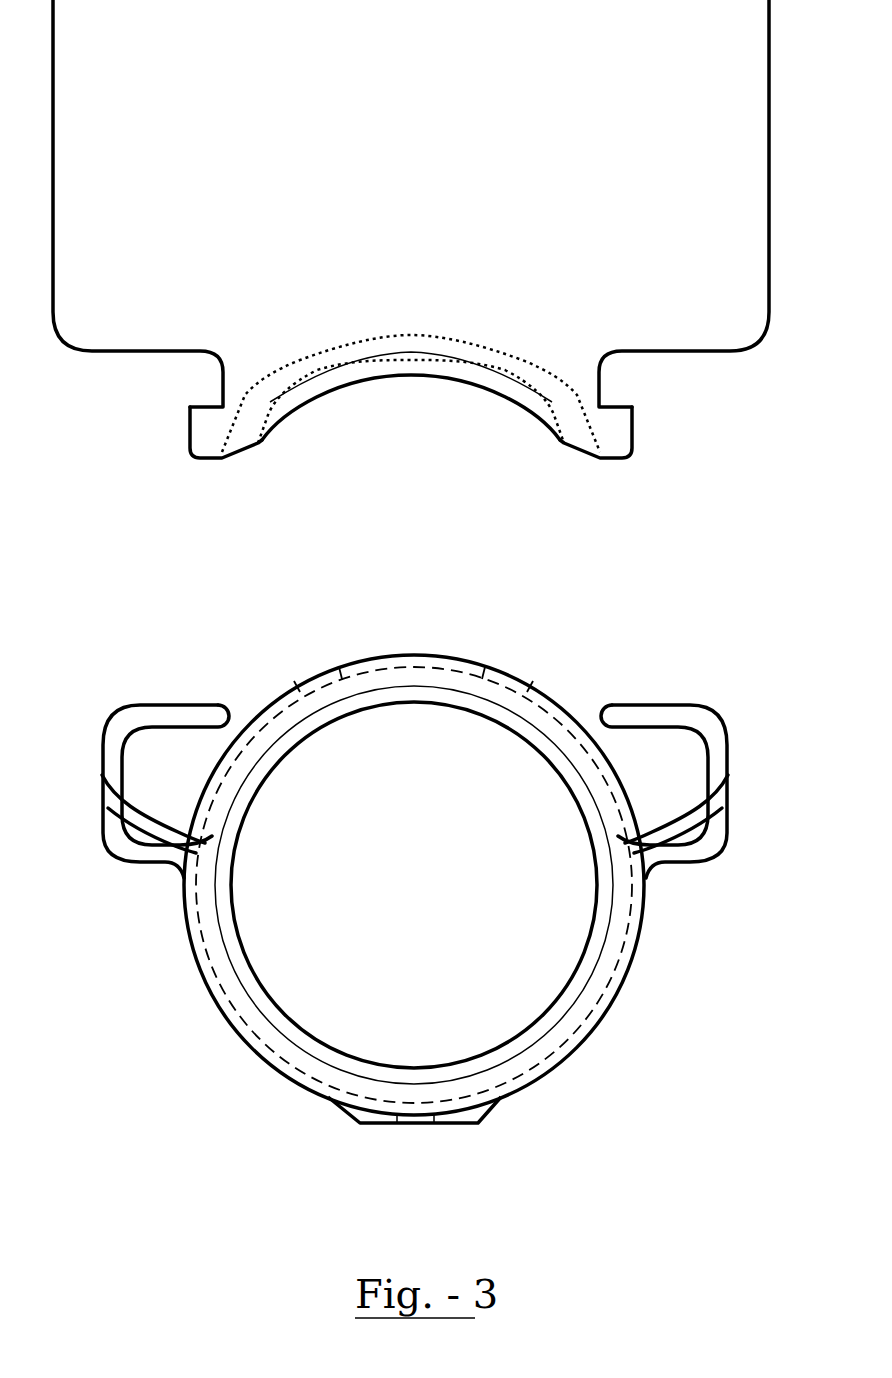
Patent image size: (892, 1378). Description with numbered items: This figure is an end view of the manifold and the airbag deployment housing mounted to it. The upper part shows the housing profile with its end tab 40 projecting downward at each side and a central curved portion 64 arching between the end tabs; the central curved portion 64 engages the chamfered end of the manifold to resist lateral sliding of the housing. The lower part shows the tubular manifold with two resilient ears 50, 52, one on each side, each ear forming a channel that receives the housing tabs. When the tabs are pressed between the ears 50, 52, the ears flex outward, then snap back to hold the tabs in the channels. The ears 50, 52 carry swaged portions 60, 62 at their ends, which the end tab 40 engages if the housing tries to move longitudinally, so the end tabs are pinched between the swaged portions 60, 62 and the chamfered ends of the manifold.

The end tab 40 is at (202, 432).
The central curved portion 64 is at (427, 377).
The ear 50 is at (692, 862).
The ear 52 is at (142, 862).
The swaged portion 60 is at (150, 803).
The swaged portion 62 is at (672, 807).